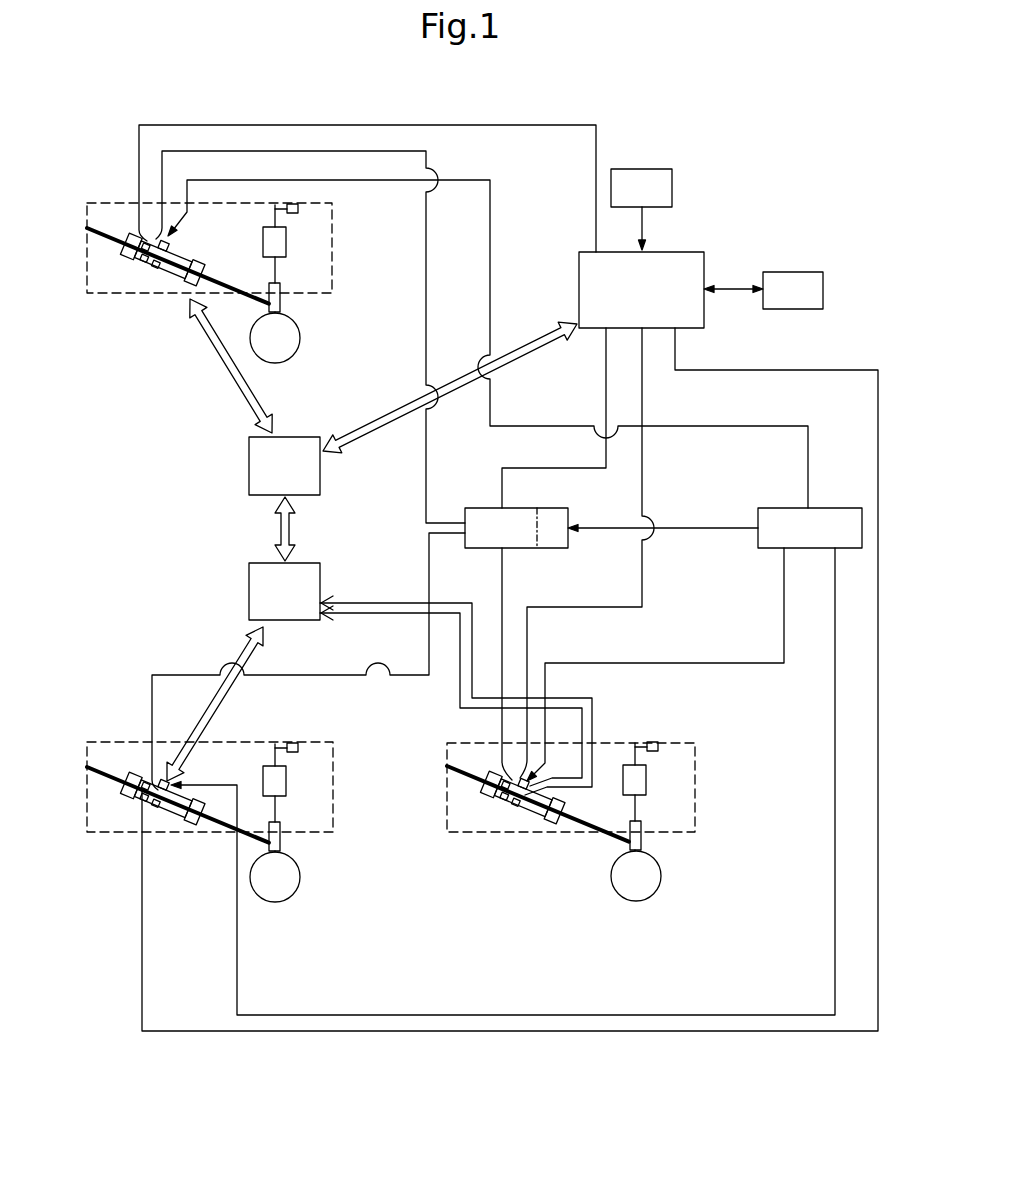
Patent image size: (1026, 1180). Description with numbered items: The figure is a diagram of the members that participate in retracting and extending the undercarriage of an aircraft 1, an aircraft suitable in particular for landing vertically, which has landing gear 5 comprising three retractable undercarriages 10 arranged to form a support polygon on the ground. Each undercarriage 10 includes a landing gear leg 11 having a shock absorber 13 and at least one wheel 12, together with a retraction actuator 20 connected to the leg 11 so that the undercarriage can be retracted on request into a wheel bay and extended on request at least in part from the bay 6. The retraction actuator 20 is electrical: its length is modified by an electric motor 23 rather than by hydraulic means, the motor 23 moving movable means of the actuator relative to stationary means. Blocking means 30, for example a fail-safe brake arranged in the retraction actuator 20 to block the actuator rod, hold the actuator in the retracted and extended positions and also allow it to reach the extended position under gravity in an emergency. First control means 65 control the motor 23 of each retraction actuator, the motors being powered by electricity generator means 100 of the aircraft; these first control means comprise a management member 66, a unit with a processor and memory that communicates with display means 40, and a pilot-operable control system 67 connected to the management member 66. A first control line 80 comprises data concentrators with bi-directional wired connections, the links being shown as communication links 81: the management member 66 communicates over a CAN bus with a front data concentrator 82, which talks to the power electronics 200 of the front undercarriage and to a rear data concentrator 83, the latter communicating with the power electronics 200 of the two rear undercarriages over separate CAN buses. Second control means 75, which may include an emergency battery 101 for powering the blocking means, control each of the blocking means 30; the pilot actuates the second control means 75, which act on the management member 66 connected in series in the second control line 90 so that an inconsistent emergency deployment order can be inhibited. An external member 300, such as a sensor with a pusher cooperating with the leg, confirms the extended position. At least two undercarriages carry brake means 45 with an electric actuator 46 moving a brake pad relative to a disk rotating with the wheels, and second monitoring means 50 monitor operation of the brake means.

The aircraft 1 is at (755, 100).
The landing gear 5 is at (112, 903).
The wheel bay 6 is at (230, 274).
The retractable undercarriage 10 is at (125, 330).
The landing gear leg 11 is at (295, 268).
The wheel 12 is at (297, 356).
The shock absorber 13 is at (287, 240).
The retraction actuator 20 is at (133, 285).
The electric motor 23 is at (158, 288).
The blocking means 30 is at (147, 265).
The display means 40 is at (780, 303).
The brake means 45 is at (543, 583).
The electric actuator 46 is at (543, 583).
The second monitoring means 50 is at (302, 841).
The first control means 65 is at (745, 210).
The management member 66 is at (628, 303).
The control system 67 is at (628, 200).
The second control means 75 is at (487, 540).
The first control line 80 is at (170, 500).
The communication link 81 is at (228, 378).
The front data concentrator 82 is at (272, 478).
The rear data concentrator 83 is at (272, 604).
The second control line 90 is at (525, 590).
The electricity generator means 100 is at (790, 541).
The emergency battery 101 is at (552, 548).
The power electronics 200 is at (170, 243).
The external member 300 is at (300, 212).